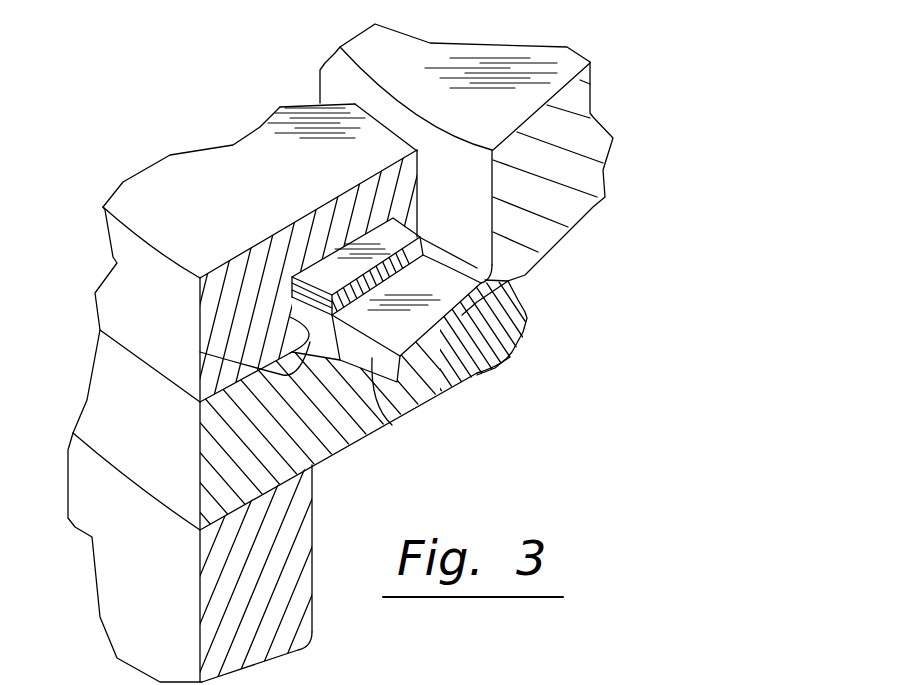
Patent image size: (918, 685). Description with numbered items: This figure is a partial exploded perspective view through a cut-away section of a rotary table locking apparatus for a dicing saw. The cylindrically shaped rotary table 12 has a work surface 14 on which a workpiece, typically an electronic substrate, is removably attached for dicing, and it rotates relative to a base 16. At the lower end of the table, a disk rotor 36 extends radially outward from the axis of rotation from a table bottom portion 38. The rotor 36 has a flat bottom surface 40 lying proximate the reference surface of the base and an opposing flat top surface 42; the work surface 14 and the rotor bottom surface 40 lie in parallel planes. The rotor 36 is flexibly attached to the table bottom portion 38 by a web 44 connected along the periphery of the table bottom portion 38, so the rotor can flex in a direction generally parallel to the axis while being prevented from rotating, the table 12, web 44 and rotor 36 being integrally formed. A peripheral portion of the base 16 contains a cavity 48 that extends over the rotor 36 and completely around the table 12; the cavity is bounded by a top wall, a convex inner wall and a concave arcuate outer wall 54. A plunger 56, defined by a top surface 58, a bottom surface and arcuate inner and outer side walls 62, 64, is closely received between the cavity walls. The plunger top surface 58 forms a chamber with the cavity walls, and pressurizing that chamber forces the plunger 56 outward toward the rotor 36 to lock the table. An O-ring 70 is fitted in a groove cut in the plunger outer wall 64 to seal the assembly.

The rotary table 12 is at (573, 130).
The work surface 14 is at (503, 53).
The base 16 is at (140, 608).
The disk rotor 36 is at (462, 320).
The table bottom portion 38 is at (524, 285).
The flat bottom surface 40 is at (387, 423).
The flat top surface 42 is at (463, 377).
The web 44 is at (477, 268).
The cavity 48 is at (296, 203).
The outer wall 54 is at (203, 352).
The plunger 56 is at (278, 233).
The top surface 58 is at (393, 233).
The inner side wall 62 is at (423, 245).
The outer side wall 64 is at (292, 278).
The O-ring 70 is at (292, 300).